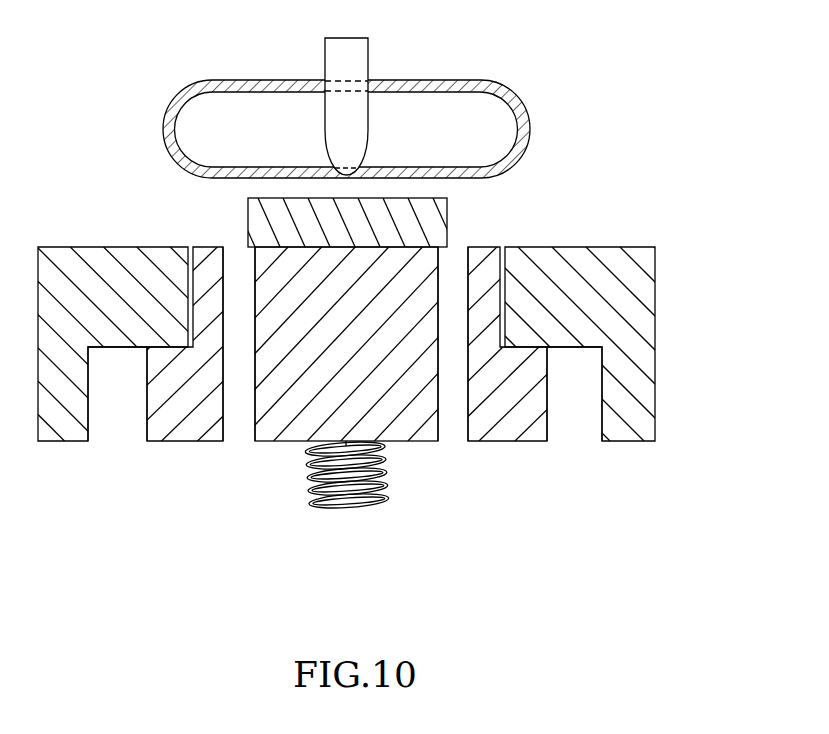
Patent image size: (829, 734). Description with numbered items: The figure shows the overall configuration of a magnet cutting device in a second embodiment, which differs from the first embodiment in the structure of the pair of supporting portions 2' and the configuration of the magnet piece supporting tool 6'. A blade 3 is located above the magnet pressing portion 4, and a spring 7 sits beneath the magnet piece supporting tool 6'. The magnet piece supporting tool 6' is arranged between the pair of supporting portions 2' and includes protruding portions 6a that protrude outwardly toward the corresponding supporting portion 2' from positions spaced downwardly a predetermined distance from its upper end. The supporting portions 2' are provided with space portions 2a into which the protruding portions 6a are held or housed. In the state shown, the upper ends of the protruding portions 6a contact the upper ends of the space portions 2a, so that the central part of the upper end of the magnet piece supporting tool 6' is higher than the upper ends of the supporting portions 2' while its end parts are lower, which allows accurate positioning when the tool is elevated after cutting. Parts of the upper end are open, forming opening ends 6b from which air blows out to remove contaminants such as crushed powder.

The blade 3 is at (333, 60).
The magnet pressing portion 4 is at (481, 82).
The supporting portions 2' is at (414, 319).
The space portions 2a is at (112, 423).
The protruding portions 6a is at (177, 422).
The opening ends 6b is at (234, 260).
The magnet piece supporting tool 6' is at (348, 363).
The spring 7 is at (317, 511).